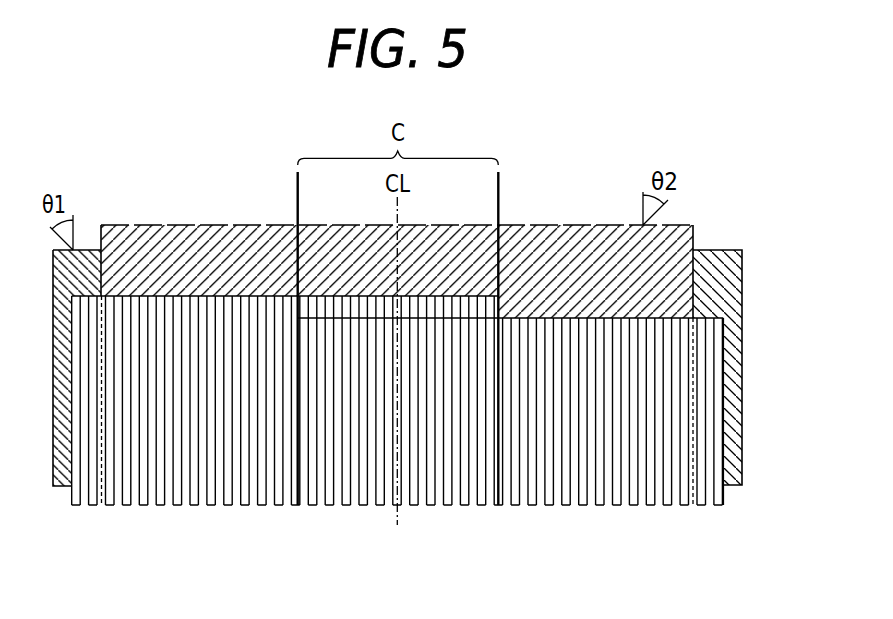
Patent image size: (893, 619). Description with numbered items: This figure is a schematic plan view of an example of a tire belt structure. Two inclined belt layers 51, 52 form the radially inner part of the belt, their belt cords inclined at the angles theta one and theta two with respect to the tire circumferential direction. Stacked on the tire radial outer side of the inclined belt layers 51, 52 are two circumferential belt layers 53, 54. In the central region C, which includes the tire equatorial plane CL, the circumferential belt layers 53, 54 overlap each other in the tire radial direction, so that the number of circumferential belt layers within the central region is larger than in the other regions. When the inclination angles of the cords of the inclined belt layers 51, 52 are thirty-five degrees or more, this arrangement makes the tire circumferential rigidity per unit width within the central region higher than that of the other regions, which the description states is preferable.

The inclined belt layer 51 is at (664, 232).
The inclined belt layer 52 is at (715, 288).
The circumferential belt layer 53 is at (85, 378).
The circumferential belt layer 54 is at (710, 435).